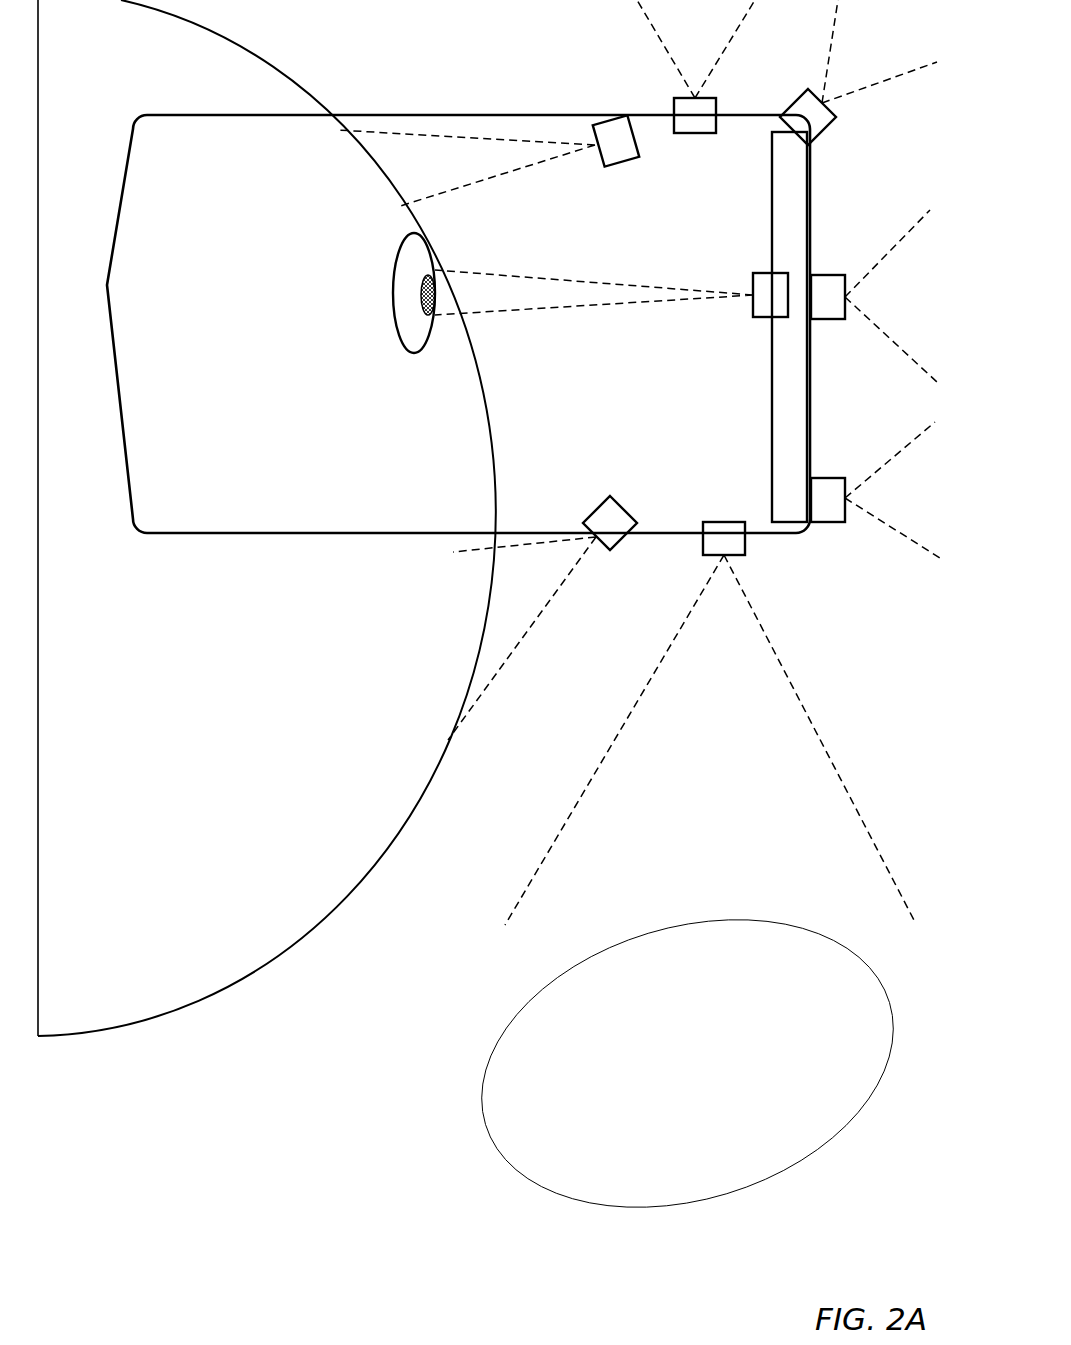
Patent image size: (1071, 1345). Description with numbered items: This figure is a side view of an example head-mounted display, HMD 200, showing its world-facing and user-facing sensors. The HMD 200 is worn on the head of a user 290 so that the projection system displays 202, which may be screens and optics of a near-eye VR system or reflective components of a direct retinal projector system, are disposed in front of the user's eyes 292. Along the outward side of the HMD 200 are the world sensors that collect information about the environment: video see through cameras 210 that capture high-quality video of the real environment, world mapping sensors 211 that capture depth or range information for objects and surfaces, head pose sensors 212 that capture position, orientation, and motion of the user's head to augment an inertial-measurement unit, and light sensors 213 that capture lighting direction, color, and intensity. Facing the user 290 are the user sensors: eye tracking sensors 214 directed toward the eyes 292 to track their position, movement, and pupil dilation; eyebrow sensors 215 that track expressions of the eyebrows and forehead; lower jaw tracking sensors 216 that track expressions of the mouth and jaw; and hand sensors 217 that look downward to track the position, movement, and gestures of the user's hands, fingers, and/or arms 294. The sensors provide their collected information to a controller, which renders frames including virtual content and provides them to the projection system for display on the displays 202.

The head-mounted display (HMD) 200 is at (458, 324).
The projection system displays 202 is at (772, 437).
The video see through cameras 210 is at (828, 275).
The world mapping sensors 211 is at (828, 478).
The head pose sensors 212 is at (823, 140).
The light sensors 213 is at (697, 133).
The eye tracking sensors 214 is at (760, 317).
The eyebrow sensors 215 is at (622, 167).
The lower jaw tracking sensors 216 is at (596, 507).
The hand sensors 217 is at (728, 522).
The user 290 is at (267, 518).
The eyes 292 is at (412, 297).
The hands, fingers, and/or arms 294 is at (687, 1063).